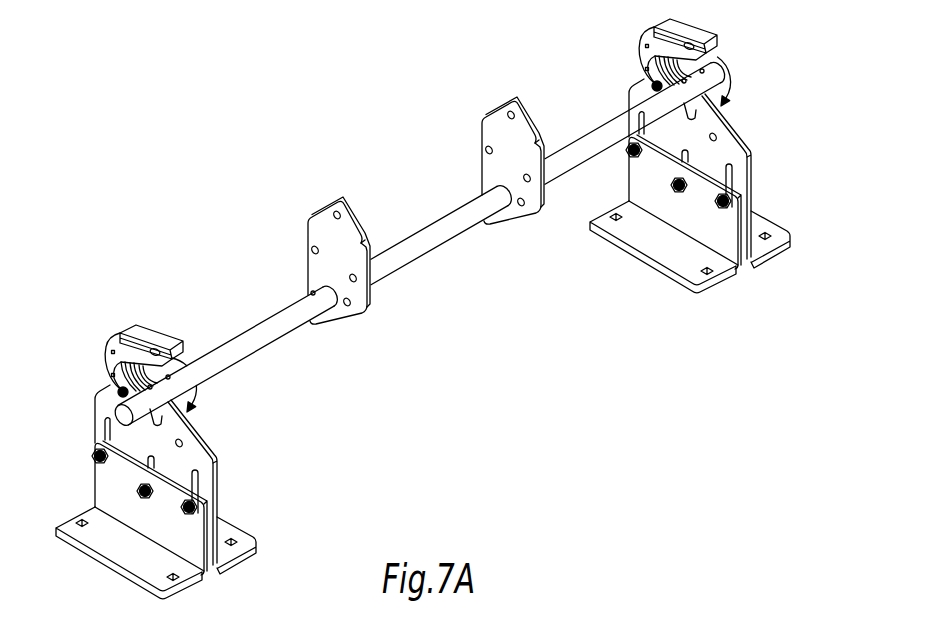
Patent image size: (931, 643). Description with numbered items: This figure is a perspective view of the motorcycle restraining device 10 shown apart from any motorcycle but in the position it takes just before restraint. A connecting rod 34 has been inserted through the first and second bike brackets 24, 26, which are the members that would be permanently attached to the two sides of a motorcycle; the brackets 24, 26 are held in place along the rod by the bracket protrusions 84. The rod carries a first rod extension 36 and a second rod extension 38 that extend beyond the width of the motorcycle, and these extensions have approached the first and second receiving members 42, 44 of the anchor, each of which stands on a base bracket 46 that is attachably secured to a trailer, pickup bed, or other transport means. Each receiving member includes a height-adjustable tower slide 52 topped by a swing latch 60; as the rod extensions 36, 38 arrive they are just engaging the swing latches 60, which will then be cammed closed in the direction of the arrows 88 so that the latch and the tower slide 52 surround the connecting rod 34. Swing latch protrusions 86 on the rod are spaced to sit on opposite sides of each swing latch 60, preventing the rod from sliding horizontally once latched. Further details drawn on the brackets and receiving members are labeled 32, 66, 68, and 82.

The motorcycle restraining device 10 is at (290, 128).
The first bracket 24 is at (500, 110).
The second bracket 26 is at (330, 210).
The mounting hole 32 is at (312, 251).
The connecting rod 34 is at (428, 228).
The first rod extension 36 is at (724, 77).
The second rod extension 38 is at (115, 414).
The first receiving member 42 is at (578, 222).
The second receiving member 44 is at (100, 578).
The base bracket 46 is at (84, 520).
The tower slide 52 is at (217, 462).
The swing latch 60 is at (401, 200).
The clamp body 66 is at (106, 366).
The clamp block 68 is at (166, 337).
The bolt 82 is at (96, 458).
The bracket protrusion 84 is at (311, 292).
The swing latch protrusion 86 is at (173, 377).
The arrow 88 is at (197, 398).